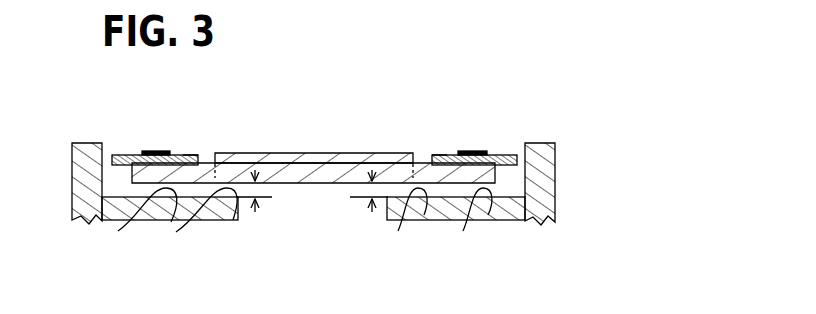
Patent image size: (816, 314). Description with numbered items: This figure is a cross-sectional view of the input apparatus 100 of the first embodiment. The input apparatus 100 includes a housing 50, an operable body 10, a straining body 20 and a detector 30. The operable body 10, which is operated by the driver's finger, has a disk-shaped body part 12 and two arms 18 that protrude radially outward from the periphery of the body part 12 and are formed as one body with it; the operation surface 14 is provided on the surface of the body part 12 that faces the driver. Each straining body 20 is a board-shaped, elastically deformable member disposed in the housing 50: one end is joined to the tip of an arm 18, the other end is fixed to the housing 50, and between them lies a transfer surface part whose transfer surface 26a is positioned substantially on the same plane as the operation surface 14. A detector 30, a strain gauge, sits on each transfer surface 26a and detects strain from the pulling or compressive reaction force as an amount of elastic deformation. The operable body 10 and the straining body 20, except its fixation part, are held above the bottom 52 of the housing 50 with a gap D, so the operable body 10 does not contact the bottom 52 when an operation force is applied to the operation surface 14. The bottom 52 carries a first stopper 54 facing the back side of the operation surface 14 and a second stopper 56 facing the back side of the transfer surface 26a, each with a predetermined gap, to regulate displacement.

The input apparatus 100 is at (567, 60).
The operable body 10 is at (378, 108).
The body part 12 is at (290, 185).
The operation surface 14 is at (282, 153).
The arm 18 is at (125, 208).
The straining body 20 is at (123, 155).
The transfer surface 26a is at (183, 155).
The detector 30 is at (155, 151).
The housing 50 is at (559, 172).
The bottom 52 is at (181, 224).
The first stopper 54 is at (225, 215).
The second stopper 56 is at (165, 215).